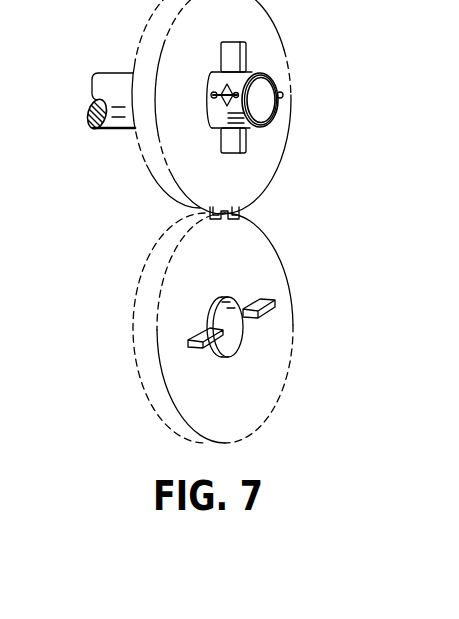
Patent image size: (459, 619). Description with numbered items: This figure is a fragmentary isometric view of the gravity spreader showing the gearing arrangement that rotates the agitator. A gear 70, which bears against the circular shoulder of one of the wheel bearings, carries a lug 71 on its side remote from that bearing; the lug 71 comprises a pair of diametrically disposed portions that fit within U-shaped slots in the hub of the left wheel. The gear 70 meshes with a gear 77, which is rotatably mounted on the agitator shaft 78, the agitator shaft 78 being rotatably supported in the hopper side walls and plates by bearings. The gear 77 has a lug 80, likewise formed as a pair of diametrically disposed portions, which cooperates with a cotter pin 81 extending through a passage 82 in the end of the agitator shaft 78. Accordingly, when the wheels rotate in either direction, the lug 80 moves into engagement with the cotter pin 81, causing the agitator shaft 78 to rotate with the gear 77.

The gear 70 is at (290, 278).
The lug 71 is at (273, 308).
The gear 77 is at (271, 183).
The agitator shaft 78 is at (257, 82).
The lug 80 is at (234, 50).
The cotter pin 81 is at (213, 88).
The passage 82 is at (245, 129).